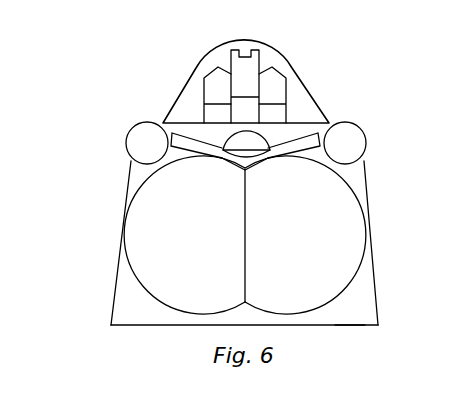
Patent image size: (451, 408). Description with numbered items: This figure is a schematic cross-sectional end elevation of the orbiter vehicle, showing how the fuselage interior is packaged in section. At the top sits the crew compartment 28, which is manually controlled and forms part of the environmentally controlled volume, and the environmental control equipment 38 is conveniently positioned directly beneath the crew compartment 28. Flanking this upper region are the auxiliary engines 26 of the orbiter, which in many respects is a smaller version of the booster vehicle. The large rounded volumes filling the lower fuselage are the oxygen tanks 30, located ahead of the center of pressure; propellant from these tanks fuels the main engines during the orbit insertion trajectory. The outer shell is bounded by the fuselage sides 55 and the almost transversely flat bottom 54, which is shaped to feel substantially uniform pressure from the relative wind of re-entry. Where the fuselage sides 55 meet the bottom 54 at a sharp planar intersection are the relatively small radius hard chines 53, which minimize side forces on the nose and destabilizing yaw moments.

The auxiliary engines 26 is at (160, 156).
The crew compartment 28 is at (248, 76).
The oxygen tanks 30 is at (194, 237).
The environmental control equipment 38 is at (252, 144).
The hard chines 53 is at (111, 325).
The bottom 54 is at (350, 325).
The fuselage sides 55 is at (113, 262).